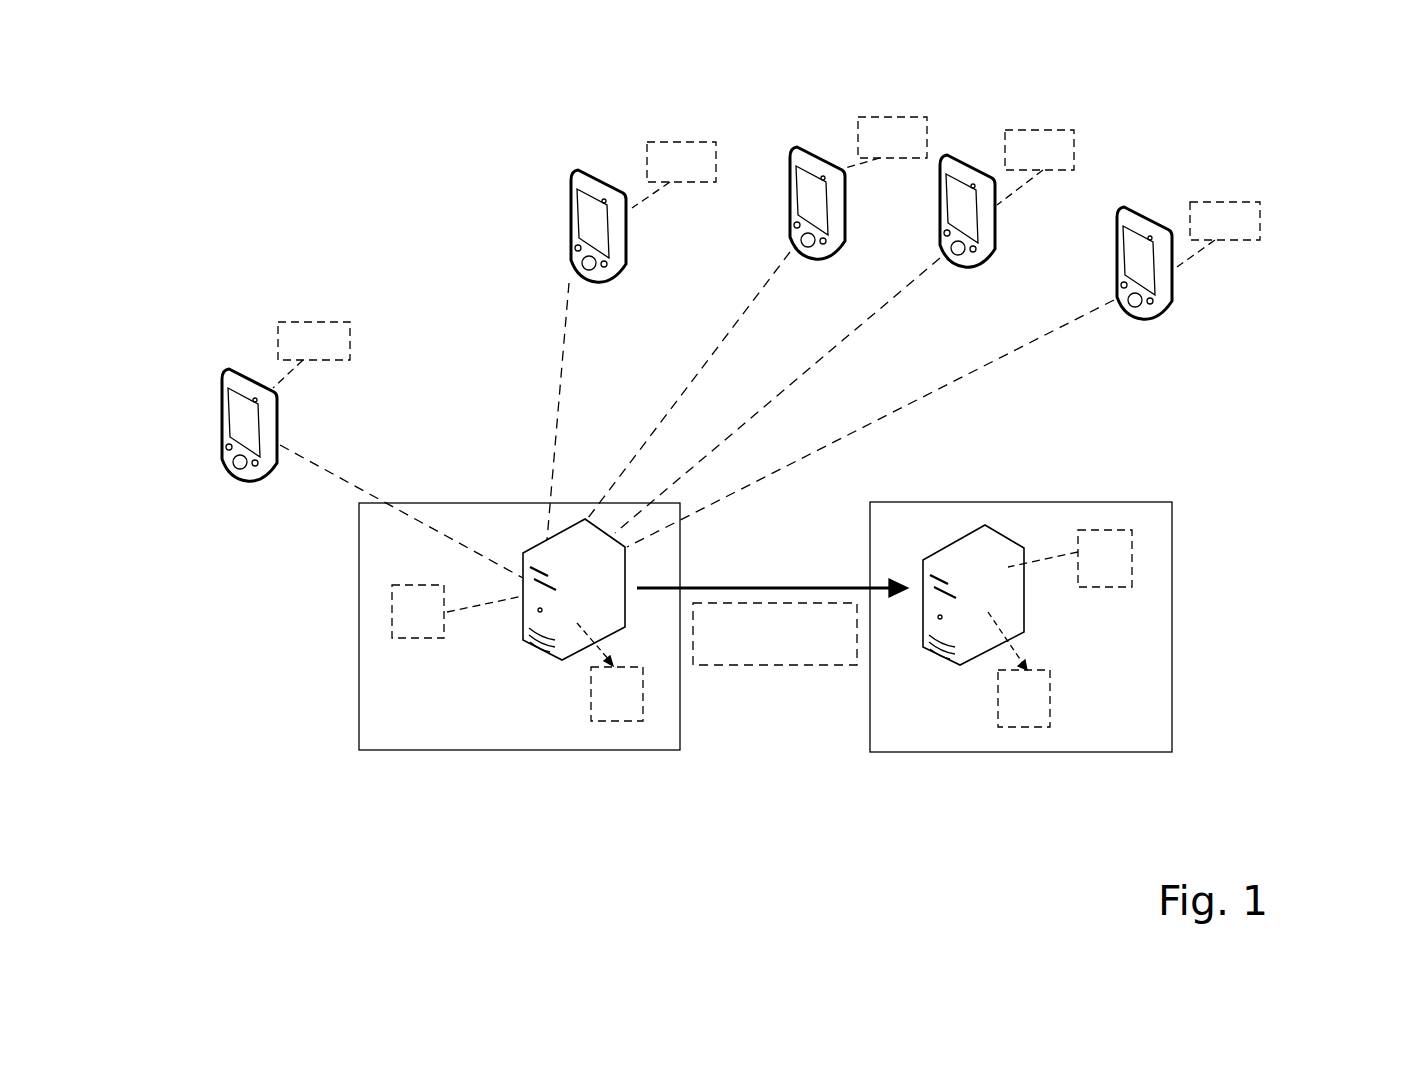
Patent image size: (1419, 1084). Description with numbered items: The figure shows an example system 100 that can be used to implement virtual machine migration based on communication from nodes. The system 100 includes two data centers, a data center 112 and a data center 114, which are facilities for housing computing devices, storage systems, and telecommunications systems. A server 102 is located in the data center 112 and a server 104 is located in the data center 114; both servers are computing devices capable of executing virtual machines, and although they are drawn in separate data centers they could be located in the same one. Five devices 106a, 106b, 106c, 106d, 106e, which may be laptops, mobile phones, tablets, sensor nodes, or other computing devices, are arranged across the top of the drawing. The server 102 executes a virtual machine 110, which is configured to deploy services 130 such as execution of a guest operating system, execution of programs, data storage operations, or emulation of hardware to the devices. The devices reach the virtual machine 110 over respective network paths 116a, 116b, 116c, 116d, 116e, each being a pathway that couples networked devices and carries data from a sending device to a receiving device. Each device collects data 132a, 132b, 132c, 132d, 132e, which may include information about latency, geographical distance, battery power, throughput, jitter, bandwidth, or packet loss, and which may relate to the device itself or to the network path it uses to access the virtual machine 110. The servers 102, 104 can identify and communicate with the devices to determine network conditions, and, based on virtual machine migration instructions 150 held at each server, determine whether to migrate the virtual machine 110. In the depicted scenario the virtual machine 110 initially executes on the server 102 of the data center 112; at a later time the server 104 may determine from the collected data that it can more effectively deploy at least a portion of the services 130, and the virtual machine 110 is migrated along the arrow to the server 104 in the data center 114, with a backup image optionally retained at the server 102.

The system 100 is at (378, 235).
The server 102 is at (523, 615).
The server 104 is at (1023, 585).
The device 106a is at (229, 370).
The device 106b is at (575, 170).
The device 106c is at (812, 148).
The device 106d is at (970, 160).
The device 106e is at (1158, 217).
The virtual machine 110 is at (813, 665).
The data center 112 is at (400, 753).
The data center 114 is at (932, 753).
The network path 116a is at (401, 511).
The network path 116b is at (538, 411).
The network path 116c is at (687, 387).
The network path 116d is at (777, 395).
The network path 116e is at (870, 423).
The services 130 is at (593, 708).
The data 132a is at (311, 355).
The data 132b is at (674, 175).
The data 132c is at (886, 142).
The data 132d is at (1035, 167).
The data 132e is at (1218, 234).
The virtual machine migration instructions 150 is at (313, 653).